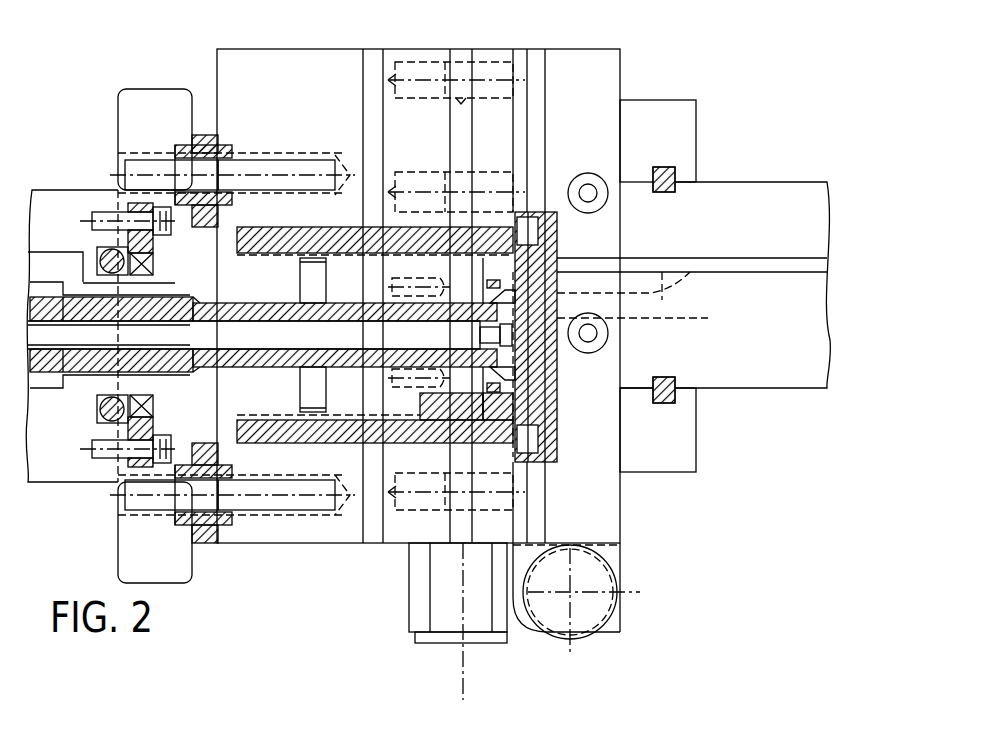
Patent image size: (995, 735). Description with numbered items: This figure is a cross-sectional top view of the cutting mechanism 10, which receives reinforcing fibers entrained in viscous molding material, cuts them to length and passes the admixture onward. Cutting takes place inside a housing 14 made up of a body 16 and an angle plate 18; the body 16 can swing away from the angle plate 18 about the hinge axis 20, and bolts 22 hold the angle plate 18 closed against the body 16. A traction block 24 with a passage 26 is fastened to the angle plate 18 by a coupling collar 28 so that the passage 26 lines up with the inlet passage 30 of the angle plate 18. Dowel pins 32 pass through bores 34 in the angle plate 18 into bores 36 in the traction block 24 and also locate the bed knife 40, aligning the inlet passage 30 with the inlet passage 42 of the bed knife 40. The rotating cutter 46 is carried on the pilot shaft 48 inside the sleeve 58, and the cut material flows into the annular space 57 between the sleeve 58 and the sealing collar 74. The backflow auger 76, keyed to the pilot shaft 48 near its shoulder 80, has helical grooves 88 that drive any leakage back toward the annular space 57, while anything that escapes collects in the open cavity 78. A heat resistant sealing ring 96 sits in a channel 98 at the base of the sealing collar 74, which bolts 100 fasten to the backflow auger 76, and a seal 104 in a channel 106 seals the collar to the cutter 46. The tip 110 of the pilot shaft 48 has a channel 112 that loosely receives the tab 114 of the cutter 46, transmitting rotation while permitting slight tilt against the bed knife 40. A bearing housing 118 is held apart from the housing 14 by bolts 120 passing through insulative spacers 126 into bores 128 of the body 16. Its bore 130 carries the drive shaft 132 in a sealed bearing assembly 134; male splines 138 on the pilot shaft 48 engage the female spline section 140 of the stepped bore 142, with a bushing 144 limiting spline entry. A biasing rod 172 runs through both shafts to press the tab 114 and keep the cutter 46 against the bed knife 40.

The cutting mechanism 10 is at (702, 80).
The housing 14 is at (627, 67).
The body 16 is at (312, 48).
The angle plate 18 is at (622, 510).
The hinge axis 20 is at (572, 592).
The bolts 22 is at (492, 60).
The traction block 24 is at (762, 181).
The passage 26 is at (748, 255).
The coupling collar 28 is at (698, 130).
The inlet passage 30 is at (616, 257).
The dowel pins 32 is at (692, 272).
The bores 34 is at (690, 320).
The bores 36 is at (686, 293).
The bed knife 40 is at (562, 210).
The inlet passage 42 is at (554, 261).
The rotating cutter 46 is at (484, 262).
The pilot shaft 48 is at (248, 300).
The annular space 57 is at (428, 260).
The sleeve 58 is at (247, 445).
The sealing collar 74 is at (443, 262).
The backflow auger 76 is at (305, 262).
The cavity 78 is at (266, 378).
The shoulder 80 is at (196, 298).
The helical grooves 88 is at (342, 252).
The sealing ring 96 is at (356, 398).
The channel 98 is at (392, 395).
The bolts 100 is at (353, 395).
The seal 104 is at (498, 392).
The channel 106 is at (512, 378).
The tip 110 is at (600, 330).
The channel 112 is at (285, 358).
The tab 114 is at (505, 318).
The bearing housing 118 is at (54, 483).
The bolts 120 is at (121, 162).
The spacers 126 is at (208, 133).
The bores 128 is at (252, 155).
The bore 130 is at (64, 250).
The drive shaft 132 is at (82, 245).
The bearing assembly 134 is at (88, 410).
The male splines 138 is at (125, 300).
The female spline section 140 is at (118, 380).
The stepped bore 142 is at (168, 372).
The bushing 144 is at (38, 297).
The biasing rod 172 is at (231, 358).